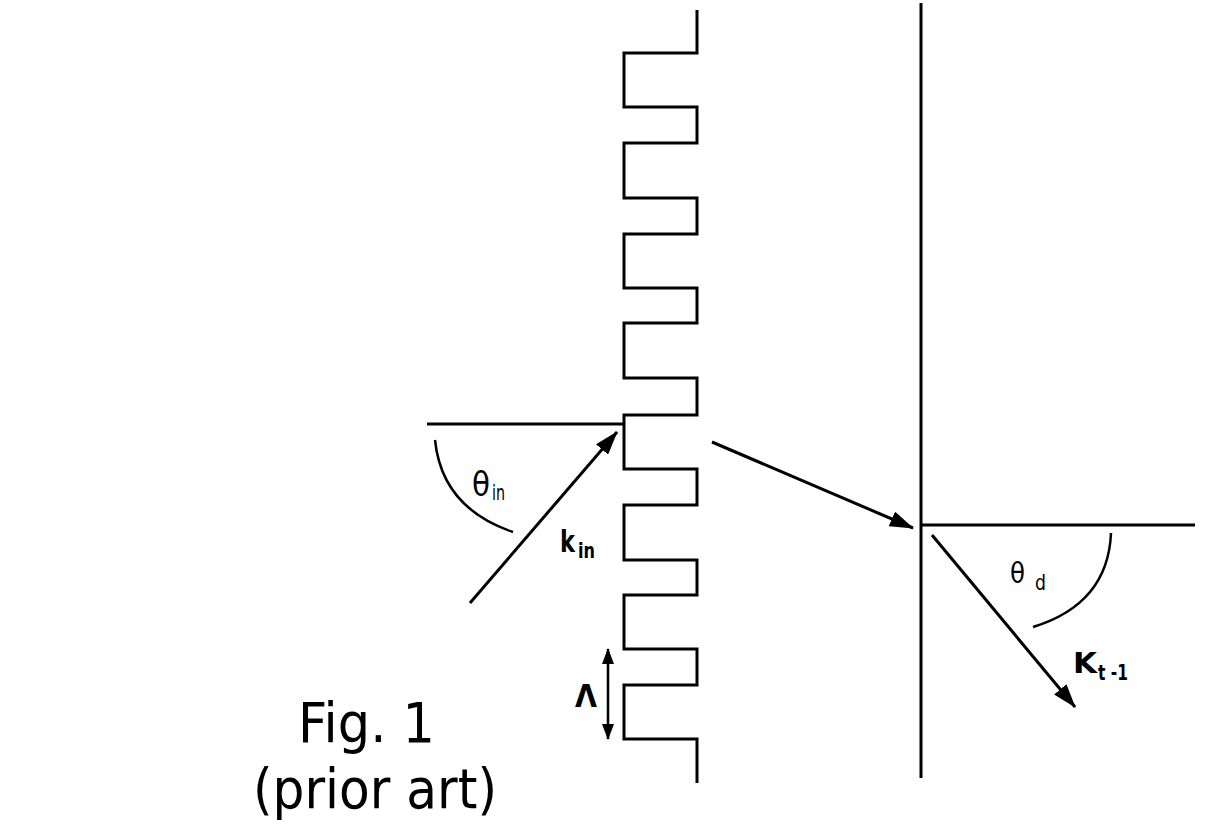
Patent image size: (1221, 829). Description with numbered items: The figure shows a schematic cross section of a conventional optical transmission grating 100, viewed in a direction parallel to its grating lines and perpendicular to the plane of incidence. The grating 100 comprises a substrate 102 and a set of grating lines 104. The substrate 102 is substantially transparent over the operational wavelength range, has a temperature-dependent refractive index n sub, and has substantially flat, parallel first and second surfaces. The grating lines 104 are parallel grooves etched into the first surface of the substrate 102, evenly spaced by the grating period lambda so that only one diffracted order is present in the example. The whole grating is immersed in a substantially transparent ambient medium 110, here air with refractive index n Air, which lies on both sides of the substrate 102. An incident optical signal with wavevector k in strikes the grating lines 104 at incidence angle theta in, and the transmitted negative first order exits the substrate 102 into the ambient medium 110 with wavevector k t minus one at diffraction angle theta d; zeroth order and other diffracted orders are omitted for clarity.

The optical transmission grating 100 is at (363, 98).
The substrate 102 is at (805, 72).
The grating lines 104 is at (600, 183).
The ambient medium 110 is at (498, 99).